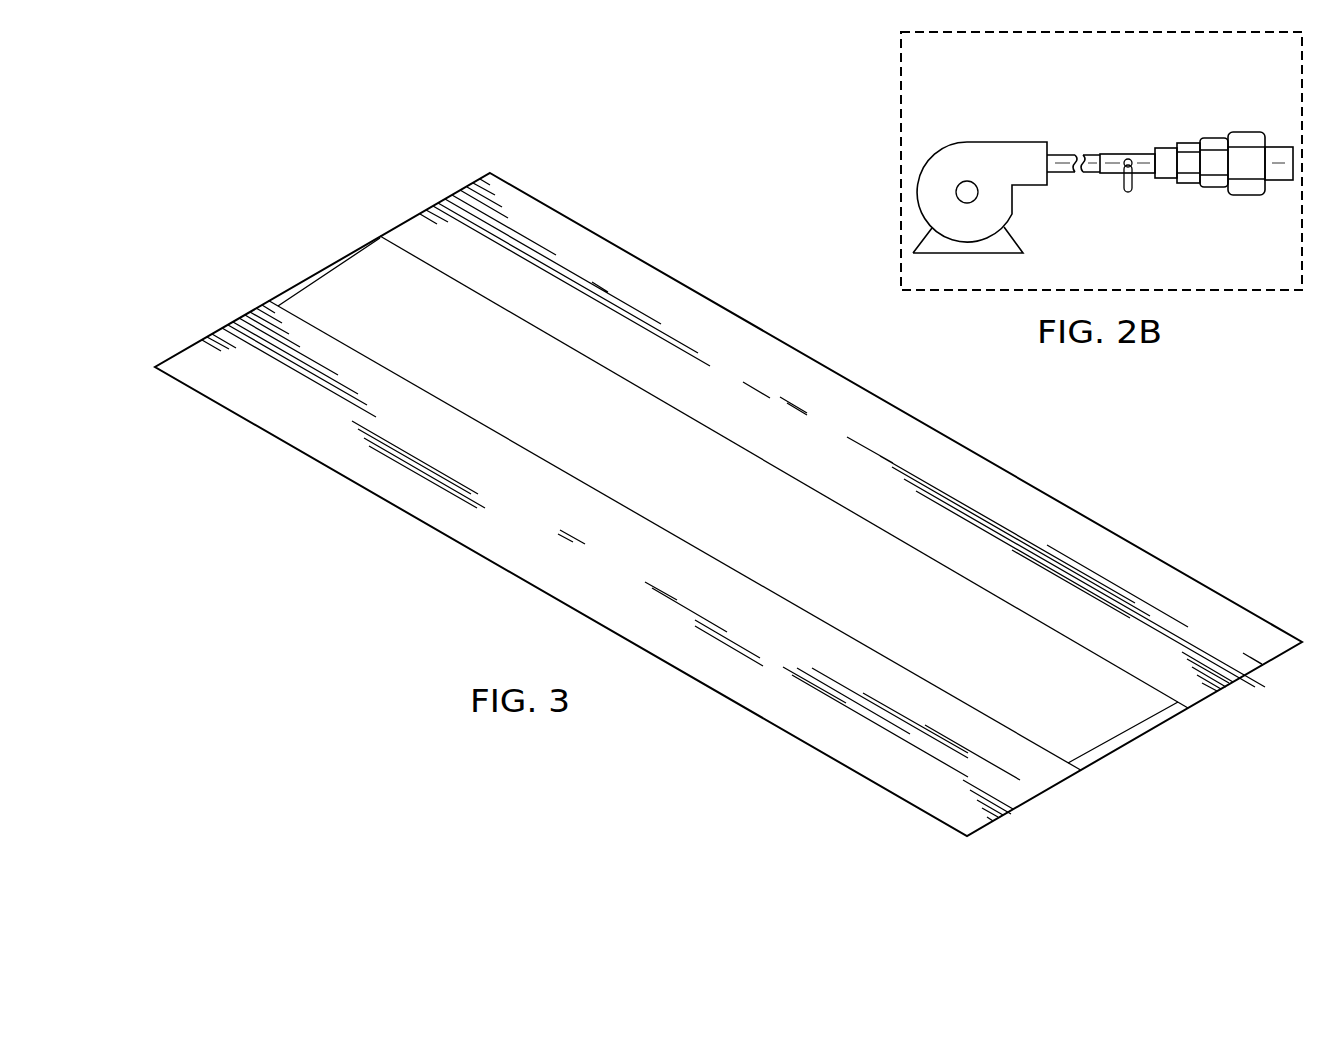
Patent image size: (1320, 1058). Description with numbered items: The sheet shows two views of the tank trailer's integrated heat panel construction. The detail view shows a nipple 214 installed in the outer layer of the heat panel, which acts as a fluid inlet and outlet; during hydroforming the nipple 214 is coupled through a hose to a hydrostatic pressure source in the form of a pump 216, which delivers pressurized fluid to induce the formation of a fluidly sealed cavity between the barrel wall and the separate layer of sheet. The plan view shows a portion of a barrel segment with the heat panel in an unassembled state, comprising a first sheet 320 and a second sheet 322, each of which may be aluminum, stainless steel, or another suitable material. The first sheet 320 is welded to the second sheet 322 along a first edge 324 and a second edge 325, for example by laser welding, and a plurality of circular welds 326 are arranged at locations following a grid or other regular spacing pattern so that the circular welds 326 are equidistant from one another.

In FIG. 2B, the nipple 214 is at (1247, 132).
In FIG. 2B, the pump 216 is at (985, 142).
In FIG. 3, the first sheet 320 is at (1140, 740).
In FIG. 3, the second sheet 322 is at (895, 413).
In FIG. 3, the first edge 324 is at (787, 470).
In FIG. 3, the second edge 325 is at (657, 528).
In FIG. 3, the circular weld 326 is at (487, 398).